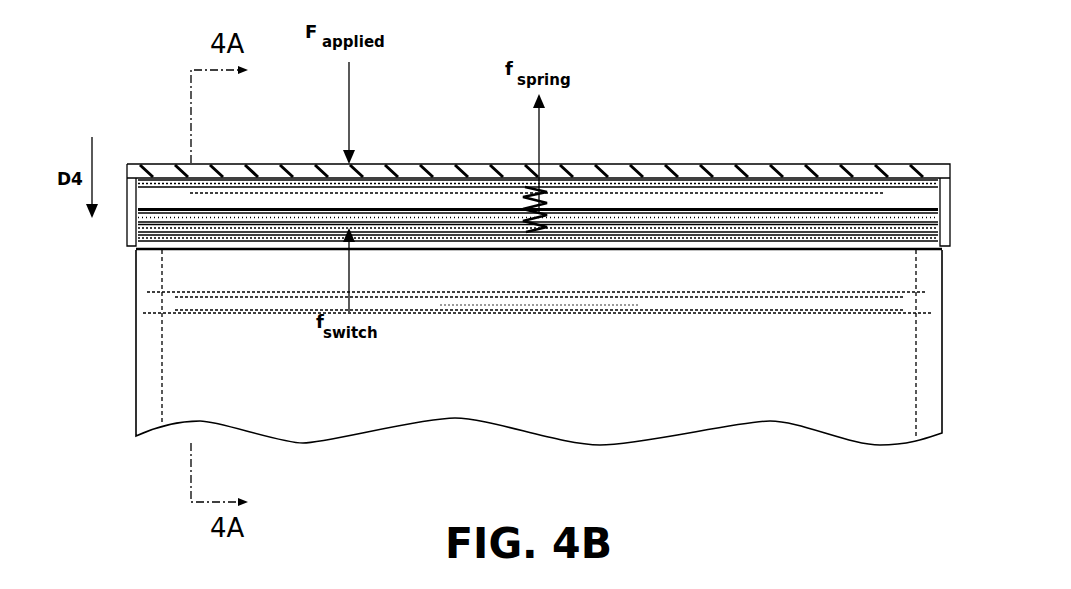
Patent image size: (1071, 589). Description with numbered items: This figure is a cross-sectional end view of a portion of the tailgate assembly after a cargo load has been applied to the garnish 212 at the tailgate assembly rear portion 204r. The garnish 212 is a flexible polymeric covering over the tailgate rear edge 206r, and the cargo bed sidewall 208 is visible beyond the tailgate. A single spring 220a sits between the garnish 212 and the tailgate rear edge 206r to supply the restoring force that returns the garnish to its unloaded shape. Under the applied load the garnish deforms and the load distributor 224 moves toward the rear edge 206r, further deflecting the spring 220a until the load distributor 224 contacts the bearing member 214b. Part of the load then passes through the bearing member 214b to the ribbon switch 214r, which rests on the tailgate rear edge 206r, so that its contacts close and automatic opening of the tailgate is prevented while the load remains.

The garnish 212 is at (272, 164).
The tailgate assembly rear portion 204r is at (668, 152).
The load distributor 224 is at (609, 181).
The bearing member 214b is at (489, 200).
The ribbon switch 214r is at (820, 250).
The tailgate rear edge 206r is at (351, 243).
The spring 220a is at (520, 250).
The sidewall 208 is at (143, 333).